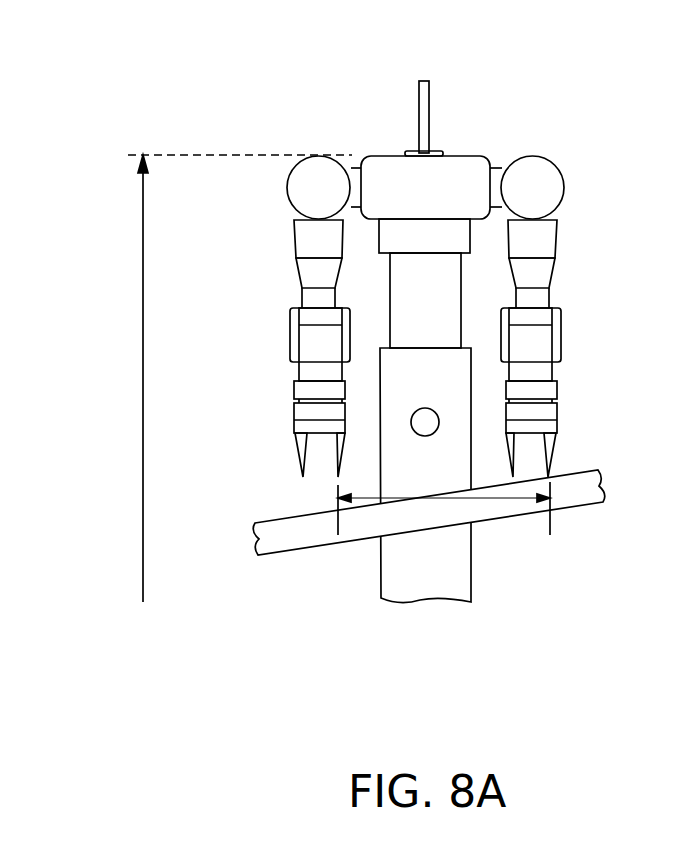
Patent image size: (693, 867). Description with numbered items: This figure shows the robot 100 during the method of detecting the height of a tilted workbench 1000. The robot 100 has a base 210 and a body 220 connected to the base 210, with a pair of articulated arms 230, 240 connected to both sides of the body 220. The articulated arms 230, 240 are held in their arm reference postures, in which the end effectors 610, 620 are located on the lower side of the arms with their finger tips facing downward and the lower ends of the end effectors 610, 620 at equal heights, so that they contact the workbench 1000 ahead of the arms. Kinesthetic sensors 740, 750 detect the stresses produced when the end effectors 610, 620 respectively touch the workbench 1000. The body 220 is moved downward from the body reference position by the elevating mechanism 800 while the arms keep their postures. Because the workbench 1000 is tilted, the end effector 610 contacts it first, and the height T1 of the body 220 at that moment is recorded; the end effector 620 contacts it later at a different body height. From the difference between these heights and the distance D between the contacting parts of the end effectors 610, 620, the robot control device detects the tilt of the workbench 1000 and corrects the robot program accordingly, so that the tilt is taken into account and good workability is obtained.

The robot 100 is at (355, 113).
The body 220 is at (470, 168).
The articulated arm 240 is at (273, 246).
The articulated arm 230 is at (580, 240).
The elevating mechanism 800 is at (428, 300).
The base 210 is at (432, 580).
The kinesthetic sensor 750 is at (293, 415).
The kinesthetic sensor 740 is at (552, 413).
The end effector 620 is at (286, 451).
The end effector 610 is at (567, 452).
The workbench 1000 is at (297, 535).
The distance D is at (495, 500).
The height of the body T1 is at (230, 378).